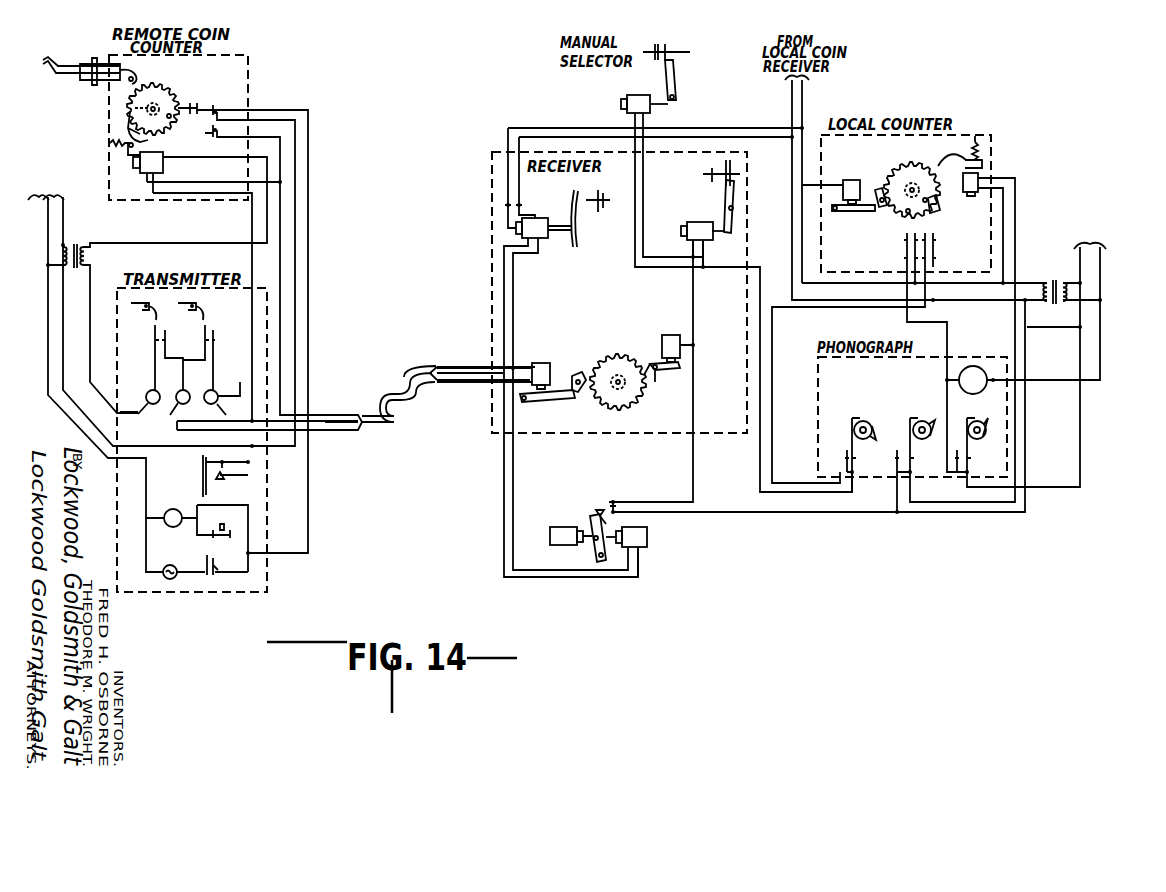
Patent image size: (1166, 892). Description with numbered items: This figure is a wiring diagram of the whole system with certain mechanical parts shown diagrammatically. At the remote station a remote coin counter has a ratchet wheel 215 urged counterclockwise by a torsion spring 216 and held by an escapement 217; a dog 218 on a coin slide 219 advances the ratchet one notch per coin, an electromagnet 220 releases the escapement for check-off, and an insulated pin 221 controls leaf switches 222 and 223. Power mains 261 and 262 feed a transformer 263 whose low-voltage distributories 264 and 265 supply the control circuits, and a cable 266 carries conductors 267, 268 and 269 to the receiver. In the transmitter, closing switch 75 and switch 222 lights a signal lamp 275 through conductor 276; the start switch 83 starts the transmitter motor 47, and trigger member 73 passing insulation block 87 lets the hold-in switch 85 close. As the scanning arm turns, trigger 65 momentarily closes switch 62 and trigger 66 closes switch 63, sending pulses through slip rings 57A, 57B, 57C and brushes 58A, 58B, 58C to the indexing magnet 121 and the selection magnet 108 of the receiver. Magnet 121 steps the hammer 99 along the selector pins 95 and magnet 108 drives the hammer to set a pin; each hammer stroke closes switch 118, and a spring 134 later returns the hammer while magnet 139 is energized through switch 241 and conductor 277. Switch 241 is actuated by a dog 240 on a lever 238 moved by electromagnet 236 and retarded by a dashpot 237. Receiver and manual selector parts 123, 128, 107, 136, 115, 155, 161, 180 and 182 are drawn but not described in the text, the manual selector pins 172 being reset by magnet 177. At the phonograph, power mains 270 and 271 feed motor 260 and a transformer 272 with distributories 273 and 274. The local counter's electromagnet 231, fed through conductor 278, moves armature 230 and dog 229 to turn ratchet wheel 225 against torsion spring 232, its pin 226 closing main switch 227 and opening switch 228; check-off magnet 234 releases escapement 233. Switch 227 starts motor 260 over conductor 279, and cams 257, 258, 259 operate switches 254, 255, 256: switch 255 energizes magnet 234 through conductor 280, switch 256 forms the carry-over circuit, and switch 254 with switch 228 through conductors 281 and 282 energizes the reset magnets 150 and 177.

The coin slide 219 is at (68, 62).
The dog 218 is at (140, 77).
The ratchet wheel 215 is at (170, 97).
The torsion spring 216 is at (135, 108).
The escapement 217 is at (126, 134).
The electromagnet 220 is at (163, 162).
The insulated pin 221 is at (193, 123).
The leaf switch 222 is at (228, 110).
The leaf switch 223 is at (218, 133).
The power main 261 is at (52, 222).
The power main 262 is at (266, 120).
The transformer 263 is at (73, 250).
The distributory 264 is at (268, 161).
The distributory 265 is at (91, 273).
The cable 266 is at (385, 366).
The conductor 267 is at (284, 139).
The conductor 268 is at (192, 200).
The conductor 269 is at (328, 433).
The power main 270 is at (912, 289).
The power main 271 is at (1104, 279).
The transformer 272 is at (1053, 281).
The distributory conductor 273 is at (791, 101).
The distributory conductor 274 is at (690, 341).
The signal lamp 275 is at (166, 585).
The conductor 276 is at (257, 110).
The conductor 277 is at (694, 488).
The conductor 278 is at (803, 110).
The conductor 279 is at (905, 323).
The conductor 280 is at (1000, 172).
The conductor 281 is at (926, 306).
The conductor 282 is at (627, 109).
The trigger 65 is at (142, 303).
The trigger 66 is at (196, 305).
The switch 62 is at (153, 336).
The switch 63 is at (214, 338).
The slip ring 57A is at (148, 392).
The slip ring 57B is at (179, 392).
The slip ring 57C is at (210, 390).
The brush 58A is at (136, 412).
The brush 58B is at (172, 416).
The brush 58C is at (221, 403).
The insulation block 87 is at (201, 465).
The trigger member 73 is at (200, 478).
The switch 85 is at (220, 480).
The transmitter motor 47 is at (167, 509).
The switch 83 is at (233, 530).
The switch 75 is at (208, 580).
The magnet 177 is at (627, 100).
The lever 180 is at (678, 78).
The manual selector pin 172 is at (680, 56).
The contact 182 is at (665, 48).
The switch 118 is at (512, 207).
The magnet 108 is at (570, 394).
The armature 115 is at (556, 220).
The hammer 99 is at (583, 225).
The selector pin 95 is at (604, 197).
The contact 161 is at (740, 173).
The switch blade 155 is at (748, 203).
The magnet 150 is at (700, 222).
The magnet 121 is at (546, 362).
The armature arm 123 is at (552, 401).
The pawl 128 is at (578, 372).
The ratchet wheel 107 is at (640, 400).
The spring 134 is at (601, 360).
The pawl 136 is at (657, 373).
The magnet 139 is at (670, 336).
The dashpot 237 is at (552, 527).
The lever 238 is at (580, 548).
The dog 240 is at (603, 518).
The leaf switch 241 is at (620, 500).
The electromagnet 236 is at (649, 539).
The electromagnet 231 is at (854, 181).
The armature 230 is at (848, 212).
The dog 229 is at (880, 189).
The torsion spring 232 is at (912, 164).
The escapement 233 is at (950, 160).
The check-off magnet 234 is at (968, 193).
The ratchet wheel 225 is at (938, 206).
The pin 226 is at (897, 211).
The main switch 227 is at (905, 256).
The switch 228 is at (935, 256).
The motor 260 is at (968, 366).
The cam 257 is at (866, 421).
The cam 258 is at (924, 421).
The cam 259 is at (980, 421).
The switch 254 is at (854, 461).
The switch 255 is at (911, 461).
The carry-over switch 256 is at (970, 461).